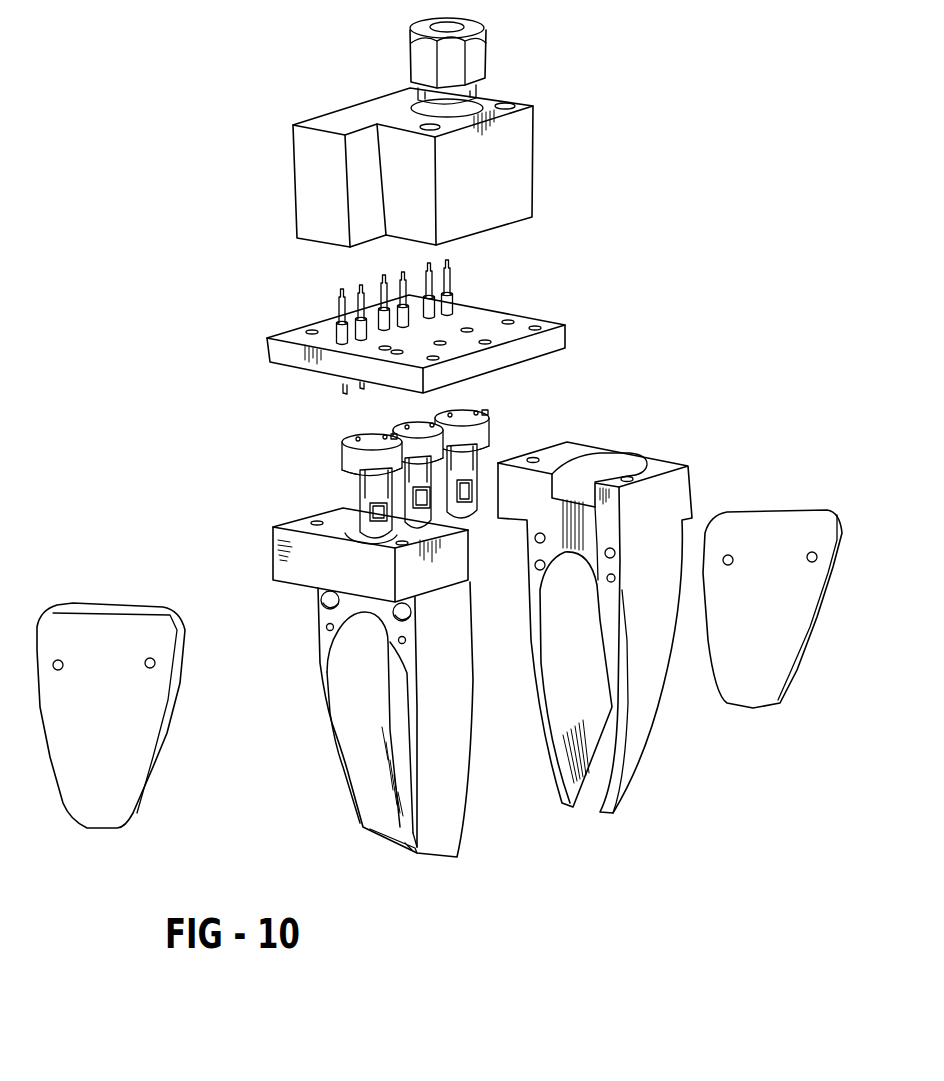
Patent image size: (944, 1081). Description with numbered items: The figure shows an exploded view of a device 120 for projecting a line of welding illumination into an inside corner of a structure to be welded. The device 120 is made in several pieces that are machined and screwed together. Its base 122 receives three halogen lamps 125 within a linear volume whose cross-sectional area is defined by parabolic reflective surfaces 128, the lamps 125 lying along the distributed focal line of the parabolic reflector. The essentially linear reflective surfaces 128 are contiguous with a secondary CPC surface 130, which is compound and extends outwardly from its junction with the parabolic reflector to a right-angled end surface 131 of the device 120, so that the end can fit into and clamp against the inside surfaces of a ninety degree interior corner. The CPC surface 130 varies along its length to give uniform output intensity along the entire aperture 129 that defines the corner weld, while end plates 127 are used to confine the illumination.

The device 120 is at (633, 386).
The base 122 is at (302, 516).
The halogen lamps 125 is at (495, 447).
The end plates 127 is at (117, 637).
The parabolic reflective surfaces 128 is at (349, 643).
The aperture 129 is at (587, 803).
The secondary CPC surface 130 is at (360, 753).
The right-angled end surface 131 is at (437, 857).